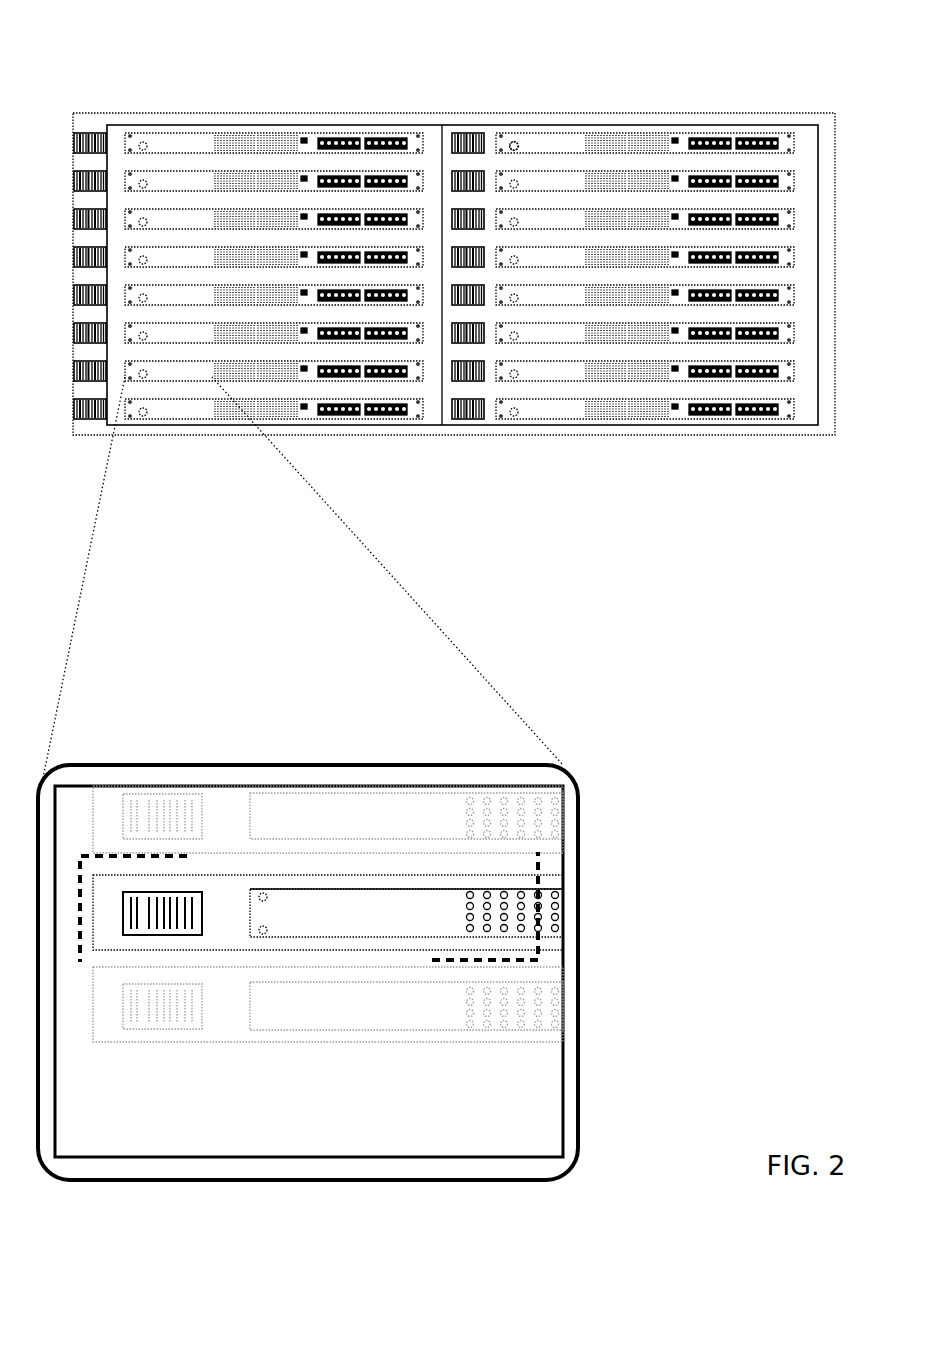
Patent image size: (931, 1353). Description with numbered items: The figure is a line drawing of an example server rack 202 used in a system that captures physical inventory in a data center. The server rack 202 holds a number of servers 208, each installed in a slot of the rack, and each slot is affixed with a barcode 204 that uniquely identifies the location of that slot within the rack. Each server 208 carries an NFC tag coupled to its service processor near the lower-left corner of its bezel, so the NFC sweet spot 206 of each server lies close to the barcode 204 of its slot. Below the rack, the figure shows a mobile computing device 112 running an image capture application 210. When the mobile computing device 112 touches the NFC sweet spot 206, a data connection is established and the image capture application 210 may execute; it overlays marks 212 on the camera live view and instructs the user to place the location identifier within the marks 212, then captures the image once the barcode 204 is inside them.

The server rack 202 is at (454, 305).
The barcode 204 is at (467, 116).
The NFC sweet spot 206 is at (516, 116).
The server 208 is at (810, 410).
The image capture application 210 is at (578, 838).
The overlaid marks 212 is at (574, 953).
The mobile computing device 112 is at (383, 972).